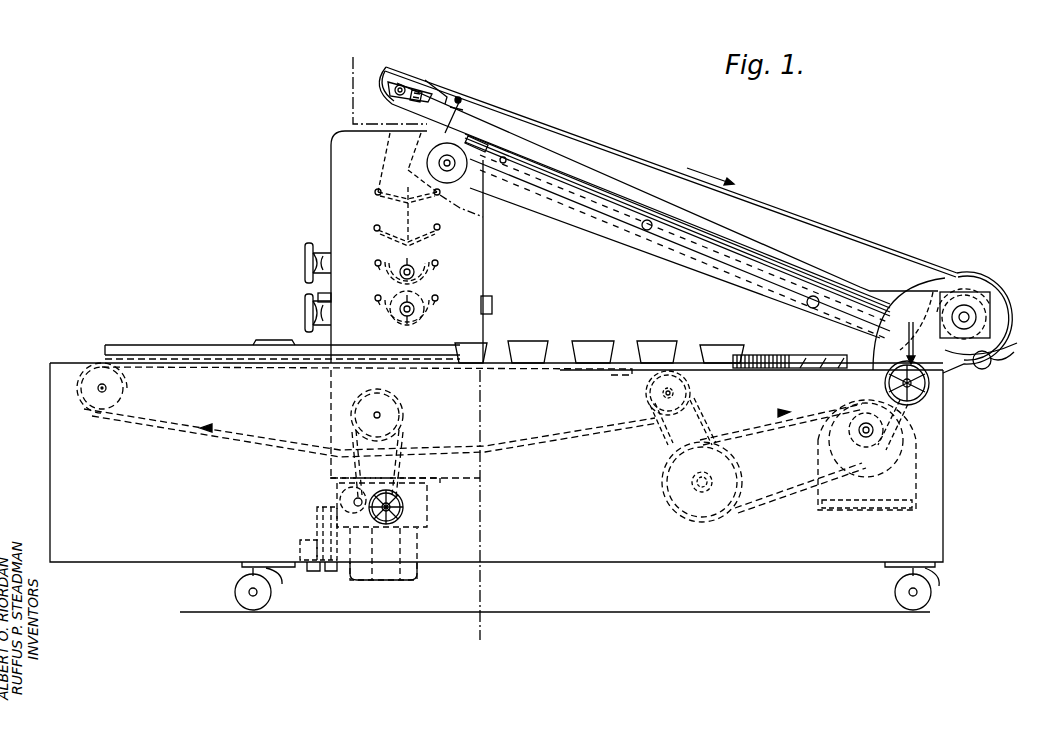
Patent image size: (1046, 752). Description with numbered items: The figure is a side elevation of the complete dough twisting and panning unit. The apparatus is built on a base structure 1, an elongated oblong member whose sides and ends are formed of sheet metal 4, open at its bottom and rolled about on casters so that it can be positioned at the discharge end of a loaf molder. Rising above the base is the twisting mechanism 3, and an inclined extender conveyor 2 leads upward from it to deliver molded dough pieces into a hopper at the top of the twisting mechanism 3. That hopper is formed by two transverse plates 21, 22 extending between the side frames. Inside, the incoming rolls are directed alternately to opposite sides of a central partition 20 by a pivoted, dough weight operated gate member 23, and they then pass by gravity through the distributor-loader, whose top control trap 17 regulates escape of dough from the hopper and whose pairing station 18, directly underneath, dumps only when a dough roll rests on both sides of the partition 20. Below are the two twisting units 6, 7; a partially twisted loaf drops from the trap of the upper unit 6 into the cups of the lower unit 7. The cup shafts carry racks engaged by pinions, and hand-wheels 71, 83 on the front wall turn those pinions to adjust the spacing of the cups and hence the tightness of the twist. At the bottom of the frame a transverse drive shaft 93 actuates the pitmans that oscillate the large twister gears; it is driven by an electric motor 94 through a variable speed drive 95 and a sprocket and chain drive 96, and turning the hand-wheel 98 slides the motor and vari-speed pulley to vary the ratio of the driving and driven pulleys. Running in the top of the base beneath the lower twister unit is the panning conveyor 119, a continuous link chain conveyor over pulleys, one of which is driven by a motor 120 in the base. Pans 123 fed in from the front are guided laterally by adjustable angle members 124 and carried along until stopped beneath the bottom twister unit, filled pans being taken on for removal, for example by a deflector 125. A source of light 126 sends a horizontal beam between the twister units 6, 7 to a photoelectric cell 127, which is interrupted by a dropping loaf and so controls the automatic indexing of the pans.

The base structure 1 is at (945, 484).
The extender conveyor 2 is at (352, 72).
The twisting mechanism 3 is at (328, 208).
The sheet metal 4 is at (586, 544).
The twisting unit 6 is at (378, 273).
The twisting unit 7 is at (379, 311).
The control trap 17 is at (386, 203).
The pairing station 18 is at (386, 238).
The central partition 20 is at (412, 218).
The transverse plate 21 is at (388, 163).
The transverse plate 22 is at (425, 143).
The gate member 23 is at (389, 178).
The hand-wheel 71 is at (305, 251).
The hand-wheel 83 is at (305, 316).
The transverse drive shaft 93 is at (380, 414).
The electric motor 94 is at (418, 573).
The variable speed drive 95 is at (300, 540).
The sprocket and chain drive 96 is at (400, 441).
The hand-wheel 98 is at (402, 520).
The panning conveyor 119 is at (598, 448).
The motor 120 is at (923, 445).
The pans 123 is at (628, 341).
The adjustable angle members 124 is at (178, 328).
The deflector 125 is at (800, 355).
The source of light 126 is at (493, 309).
The photoelectric cell 127 is at (318, 294).